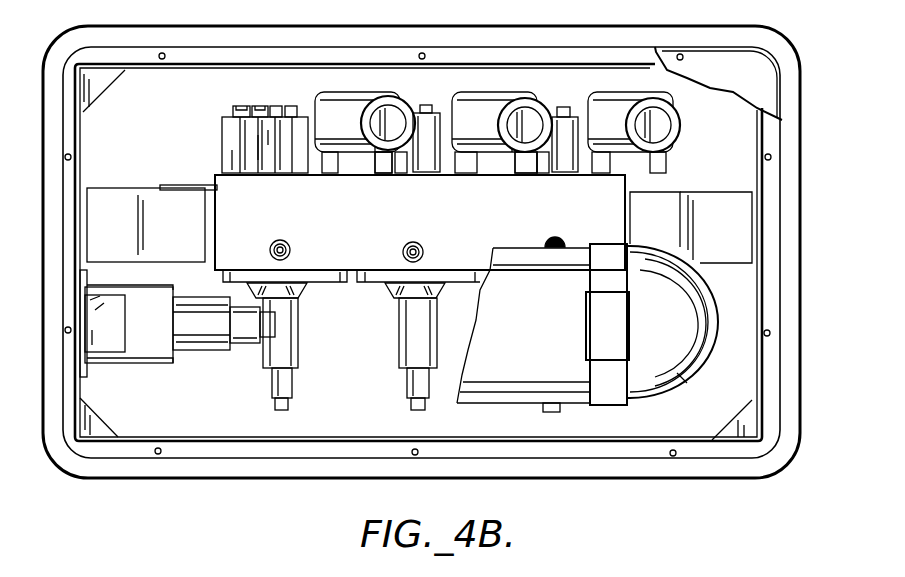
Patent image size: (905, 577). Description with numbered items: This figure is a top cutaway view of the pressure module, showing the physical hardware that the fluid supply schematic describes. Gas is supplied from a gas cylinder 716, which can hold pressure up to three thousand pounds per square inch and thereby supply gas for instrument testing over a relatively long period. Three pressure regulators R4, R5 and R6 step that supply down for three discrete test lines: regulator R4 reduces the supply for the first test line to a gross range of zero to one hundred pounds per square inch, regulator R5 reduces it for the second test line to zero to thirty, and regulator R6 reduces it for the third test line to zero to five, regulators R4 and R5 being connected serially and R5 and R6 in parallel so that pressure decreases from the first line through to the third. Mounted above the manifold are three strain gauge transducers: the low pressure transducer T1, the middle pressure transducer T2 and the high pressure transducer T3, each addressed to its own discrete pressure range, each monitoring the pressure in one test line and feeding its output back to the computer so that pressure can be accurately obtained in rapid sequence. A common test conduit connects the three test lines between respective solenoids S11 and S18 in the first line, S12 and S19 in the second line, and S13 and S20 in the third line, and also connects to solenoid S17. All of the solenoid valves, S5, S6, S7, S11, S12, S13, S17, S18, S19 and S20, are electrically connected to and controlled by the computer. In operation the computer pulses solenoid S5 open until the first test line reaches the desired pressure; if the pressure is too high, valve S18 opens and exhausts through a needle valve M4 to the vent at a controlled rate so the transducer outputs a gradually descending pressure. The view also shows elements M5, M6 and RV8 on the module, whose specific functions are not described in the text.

The solenoid valve S18 is at (297, 115).
The solenoid valve S11 is at (268, 137).
The solenoid valve S5 is at (260, 148).
The solenoid valve S17 is at (235, 162).
The high pressure transducer T3 is at (335, 117).
The middle pressure transducer T2 is at (473, 113).
The low pressure transducer T1 is at (607, 112).
The solenoid valve S6 is at (382, 168).
The solenoid valve S12 is at (400, 167).
The solenoid valve S19 is at (427, 167).
The solenoid valve S7 is at (525, 163).
The solenoid valve S13 is at (540, 163).
The solenoid valve S20 is at (563, 162).
The needle valve M4 is at (270, 247).
The manifold port fitting M5 is at (403, 250).
The manifold port fitting M6 is at (550, 243).
The pressure regulator R4 is at (275, 377).
The pressure regulator R5 is at (412, 380).
The pressure regulator R6 is at (540, 405).
The relief valve RV8 is at (202, 337).
The gas cylinder 716 is at (690, 393).